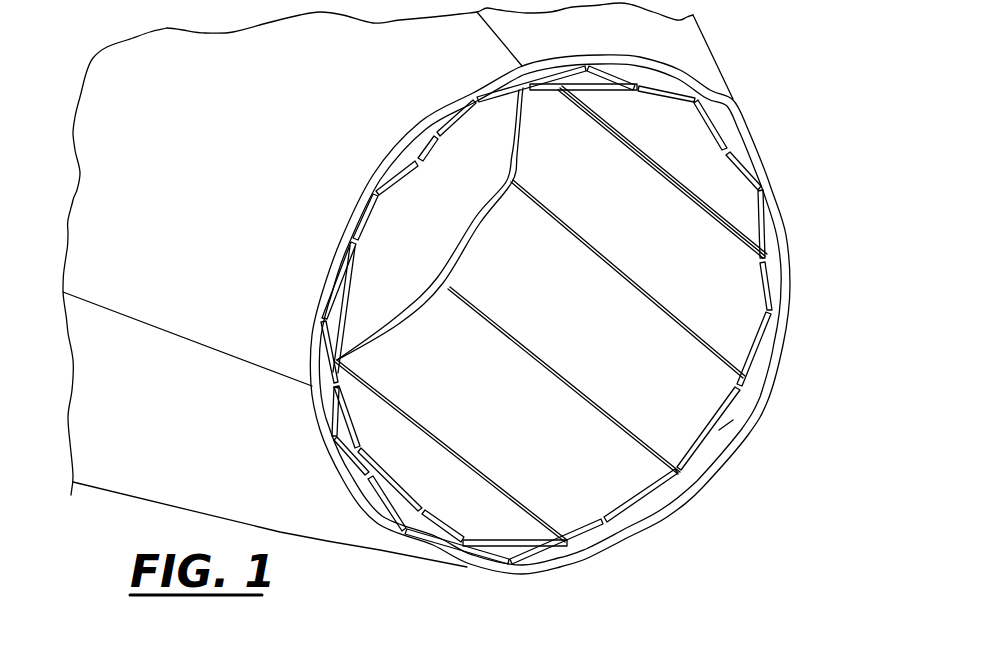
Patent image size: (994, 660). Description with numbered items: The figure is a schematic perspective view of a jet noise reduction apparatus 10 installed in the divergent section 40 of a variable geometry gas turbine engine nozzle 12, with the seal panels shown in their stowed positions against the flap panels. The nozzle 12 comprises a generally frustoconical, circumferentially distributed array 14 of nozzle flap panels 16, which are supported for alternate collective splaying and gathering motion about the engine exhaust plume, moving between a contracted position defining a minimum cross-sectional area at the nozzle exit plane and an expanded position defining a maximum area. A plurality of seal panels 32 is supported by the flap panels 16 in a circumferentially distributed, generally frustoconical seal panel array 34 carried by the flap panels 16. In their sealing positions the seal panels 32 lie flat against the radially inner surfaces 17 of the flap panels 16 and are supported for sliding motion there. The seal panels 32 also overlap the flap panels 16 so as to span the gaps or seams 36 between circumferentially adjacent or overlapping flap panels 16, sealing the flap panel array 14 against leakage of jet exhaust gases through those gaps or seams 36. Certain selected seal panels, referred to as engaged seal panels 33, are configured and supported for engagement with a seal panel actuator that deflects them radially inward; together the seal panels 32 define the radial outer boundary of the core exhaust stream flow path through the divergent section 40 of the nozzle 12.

The apparatus 10 is at (750, 42).
The variable geometry gas turbine engine nozzle 12 is at (736, 99).
The circumferentially distributed array 14 is at (746, 149).
The nozzle flap panels 16 is at (748, 152).
The radially inner surfaces 17 is at (757, 203).
The seal panels 32 is at (754, 222).
The engaged seal panels 33 is at (343, 433).
The seal panel array 34 is at (735, 408).
The gaps or seams 36 is at (400, 533).
The divergent section 40 is at (103, 264).